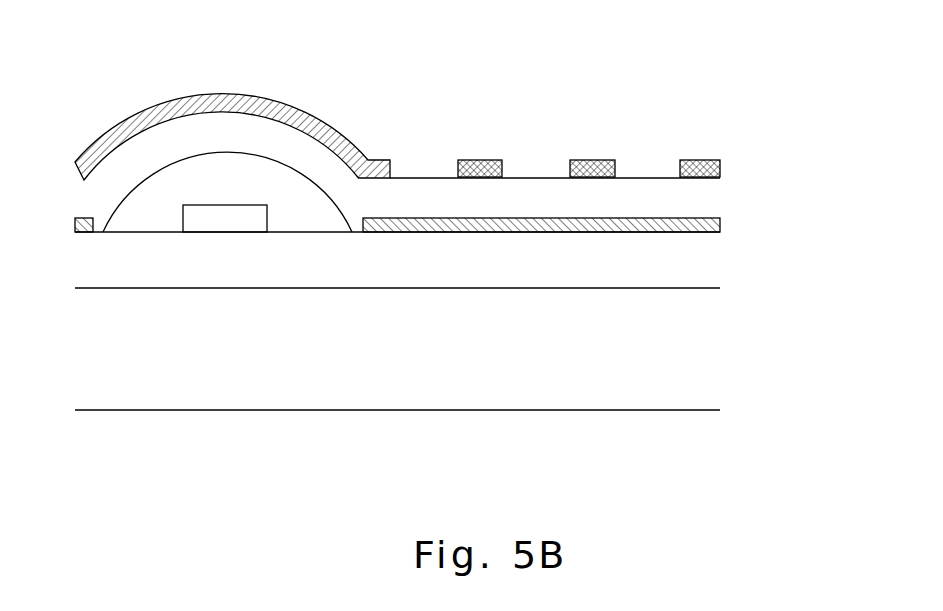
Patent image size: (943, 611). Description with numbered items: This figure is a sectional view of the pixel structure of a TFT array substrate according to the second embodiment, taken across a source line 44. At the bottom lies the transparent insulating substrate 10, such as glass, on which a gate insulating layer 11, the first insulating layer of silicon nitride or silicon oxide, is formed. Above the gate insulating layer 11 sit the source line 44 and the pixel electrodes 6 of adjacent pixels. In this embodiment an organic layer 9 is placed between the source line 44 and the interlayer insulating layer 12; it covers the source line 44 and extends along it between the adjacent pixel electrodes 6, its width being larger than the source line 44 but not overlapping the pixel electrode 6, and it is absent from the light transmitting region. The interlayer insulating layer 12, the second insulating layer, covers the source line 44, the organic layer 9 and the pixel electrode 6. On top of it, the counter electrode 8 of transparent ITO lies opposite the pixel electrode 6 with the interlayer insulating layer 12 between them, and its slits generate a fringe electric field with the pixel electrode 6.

The pixel electrode 6 is at (722, 223).
The counter electrode 8 is at (165, 98).
The organic layer 9 is at (309, 193).
The transparent insulating substrate 10 is at (710, 353).
The gate insulating layer 11 is at (710, 262).
The interlayer insulating layer 12 is at (710, 200).
The source line 44 is at (222, 215).